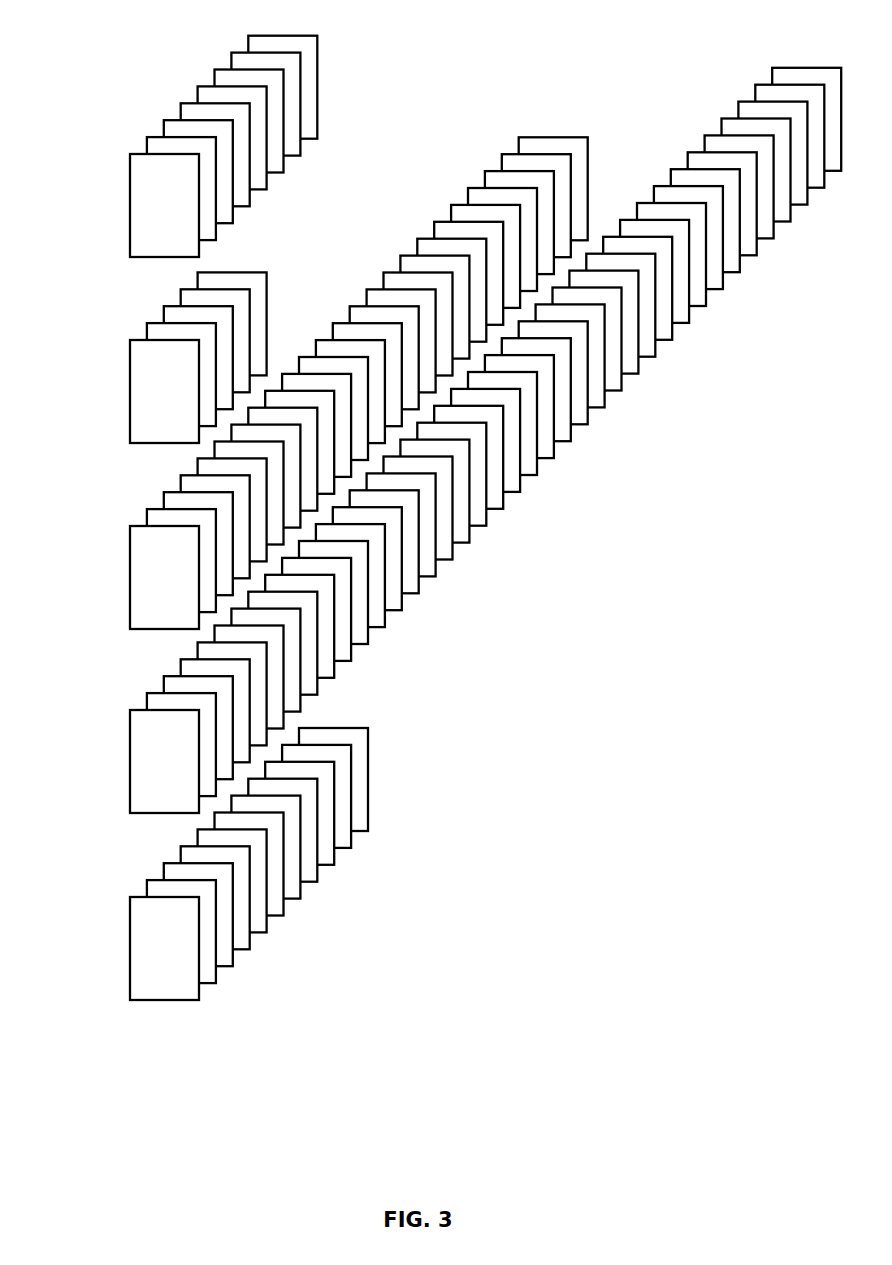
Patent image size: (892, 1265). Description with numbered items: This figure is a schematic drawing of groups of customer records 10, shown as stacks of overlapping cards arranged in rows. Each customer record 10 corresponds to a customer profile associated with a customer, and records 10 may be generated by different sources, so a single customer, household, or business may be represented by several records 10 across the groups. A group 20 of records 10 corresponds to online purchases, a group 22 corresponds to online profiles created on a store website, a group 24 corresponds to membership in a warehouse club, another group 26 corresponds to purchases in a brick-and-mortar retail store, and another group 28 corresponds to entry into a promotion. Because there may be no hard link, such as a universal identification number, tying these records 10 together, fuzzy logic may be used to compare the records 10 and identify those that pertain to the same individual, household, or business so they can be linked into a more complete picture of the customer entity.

The customer record 10 is at (296, 489).
The group of records corresponding to online purchases 20 is at (262, 489).
The group of records corresponding to online profiles 22 is at (149, 357).
The group of records corresponding to warehouse club membership 24 is at (310, 383).
The group of records corresponding to brick-and-mortar purchases 26 is at (436, 440).
The group of records corresponding to promotion entry 28 is at (200, 864).